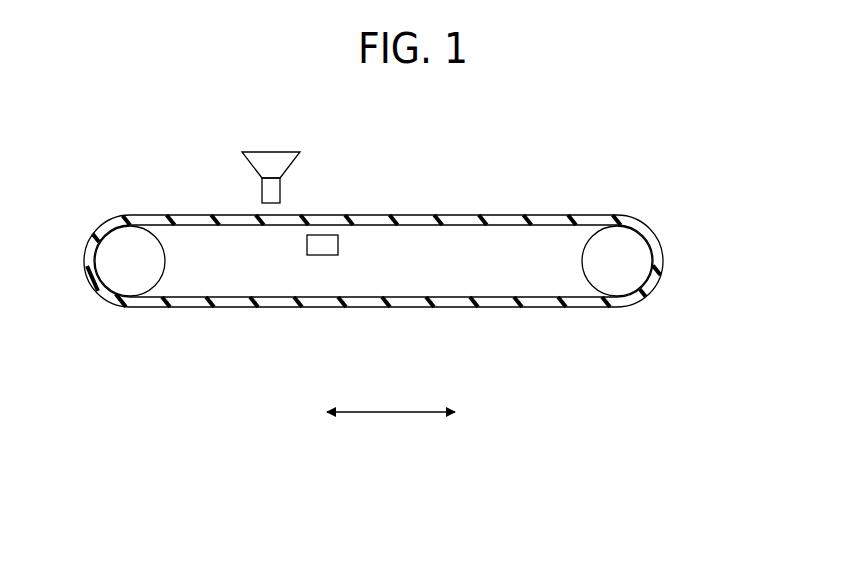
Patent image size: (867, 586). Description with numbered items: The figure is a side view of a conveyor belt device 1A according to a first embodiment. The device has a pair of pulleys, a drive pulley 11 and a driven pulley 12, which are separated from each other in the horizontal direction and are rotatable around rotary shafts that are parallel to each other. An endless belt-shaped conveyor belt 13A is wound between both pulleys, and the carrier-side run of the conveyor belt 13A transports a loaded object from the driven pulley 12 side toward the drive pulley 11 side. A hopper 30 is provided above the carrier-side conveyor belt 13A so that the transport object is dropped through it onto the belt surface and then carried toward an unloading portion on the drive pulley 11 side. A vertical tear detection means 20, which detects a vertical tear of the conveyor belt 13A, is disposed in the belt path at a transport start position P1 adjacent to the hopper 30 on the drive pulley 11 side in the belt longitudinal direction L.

The conveyor belt device 1A is at (657, 156).
The drive pulley 11 is at (643, 272).
The driven pulley 12 is at (113, 276).
The conveyor belt 13A is at (154, 213).
The vertical tear detection means 20 is at (345, 243).
The hopper 30 is at (257, 170).
The transport start position P1 is at (307, 263).
The belt longitudinal direction L is at (391, 429).